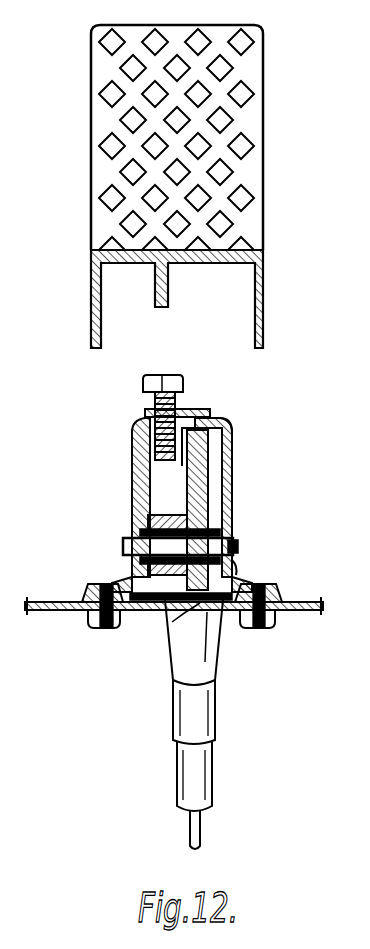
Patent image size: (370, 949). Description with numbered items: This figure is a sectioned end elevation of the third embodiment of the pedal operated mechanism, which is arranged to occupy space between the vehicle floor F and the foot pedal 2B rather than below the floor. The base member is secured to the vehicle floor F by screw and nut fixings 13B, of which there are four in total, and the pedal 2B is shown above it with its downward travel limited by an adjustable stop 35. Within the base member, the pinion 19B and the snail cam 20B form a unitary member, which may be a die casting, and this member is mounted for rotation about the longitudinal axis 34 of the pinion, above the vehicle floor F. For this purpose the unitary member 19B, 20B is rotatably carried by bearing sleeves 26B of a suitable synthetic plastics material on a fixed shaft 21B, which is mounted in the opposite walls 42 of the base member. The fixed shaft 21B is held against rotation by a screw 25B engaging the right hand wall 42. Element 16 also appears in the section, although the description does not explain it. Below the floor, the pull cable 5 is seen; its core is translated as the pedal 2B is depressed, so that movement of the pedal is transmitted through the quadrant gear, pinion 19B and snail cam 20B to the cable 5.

The foot pedal 2B is at (112, 170).
The adjustable stop 35 is at (170, 375).
The walls of the base member 42 is at (133, 460).
The snail cam 20B is at (232, 482).
The pinion 19B is at (140, 500).
The bearing sleeves 26B is at (140, 528).
The fixed shaft 21B is at (124, 546).
The longitudinal axis of the pinion 34 is at (236, 545).
The screw 25B is at (236, 556).
The vehicle floor F is at (50, 602).
The screw and nut fixings 13B is at (95, 628).
The tapered stem 16 is at (173, 622).
The pull cable 5 is at (218, 768).